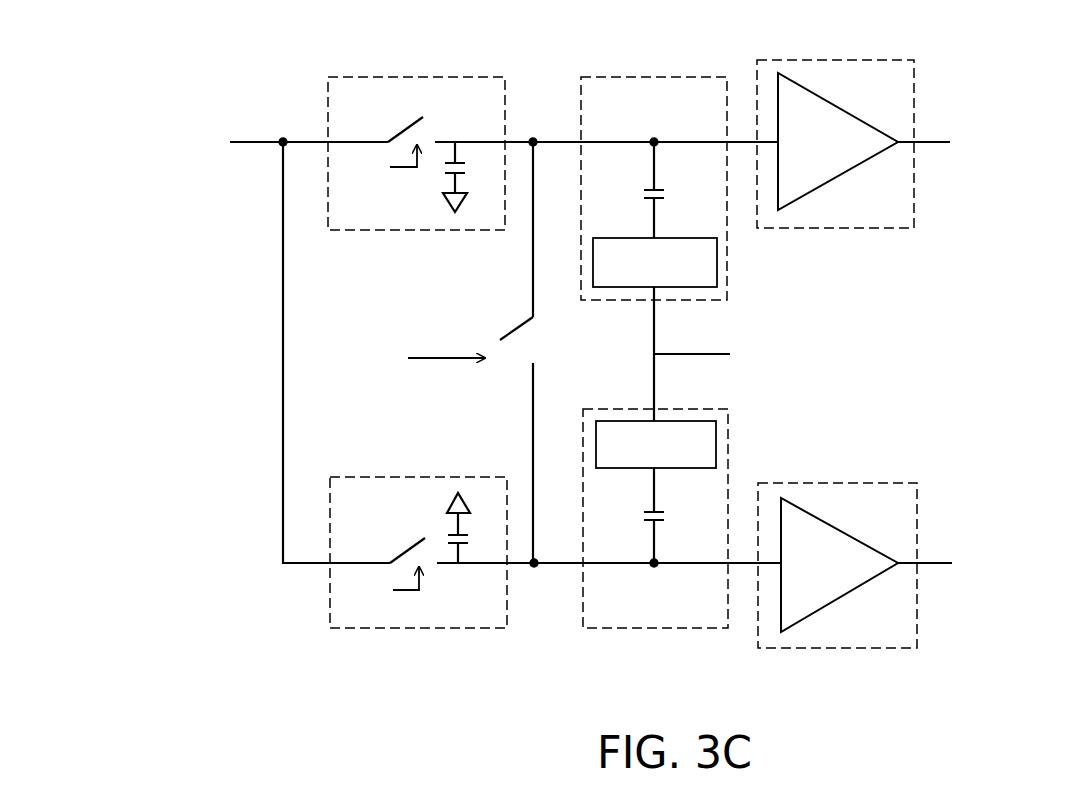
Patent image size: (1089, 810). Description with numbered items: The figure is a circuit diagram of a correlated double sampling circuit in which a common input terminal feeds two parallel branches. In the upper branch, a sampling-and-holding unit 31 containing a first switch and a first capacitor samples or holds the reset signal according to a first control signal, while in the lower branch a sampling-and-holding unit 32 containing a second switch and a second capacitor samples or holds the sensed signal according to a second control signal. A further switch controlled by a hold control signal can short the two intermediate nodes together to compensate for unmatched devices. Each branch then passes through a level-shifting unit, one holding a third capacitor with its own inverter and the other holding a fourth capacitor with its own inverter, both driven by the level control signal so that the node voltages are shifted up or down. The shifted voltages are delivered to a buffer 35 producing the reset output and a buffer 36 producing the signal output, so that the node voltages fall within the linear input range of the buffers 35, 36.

The sampling-and-holding unit 31 is at (383, 77).
The sampling-and-holding unit 32 is at (385, 628).
The buffer 35 is at (840, 60).
The buffer 36 is at (837, 483).